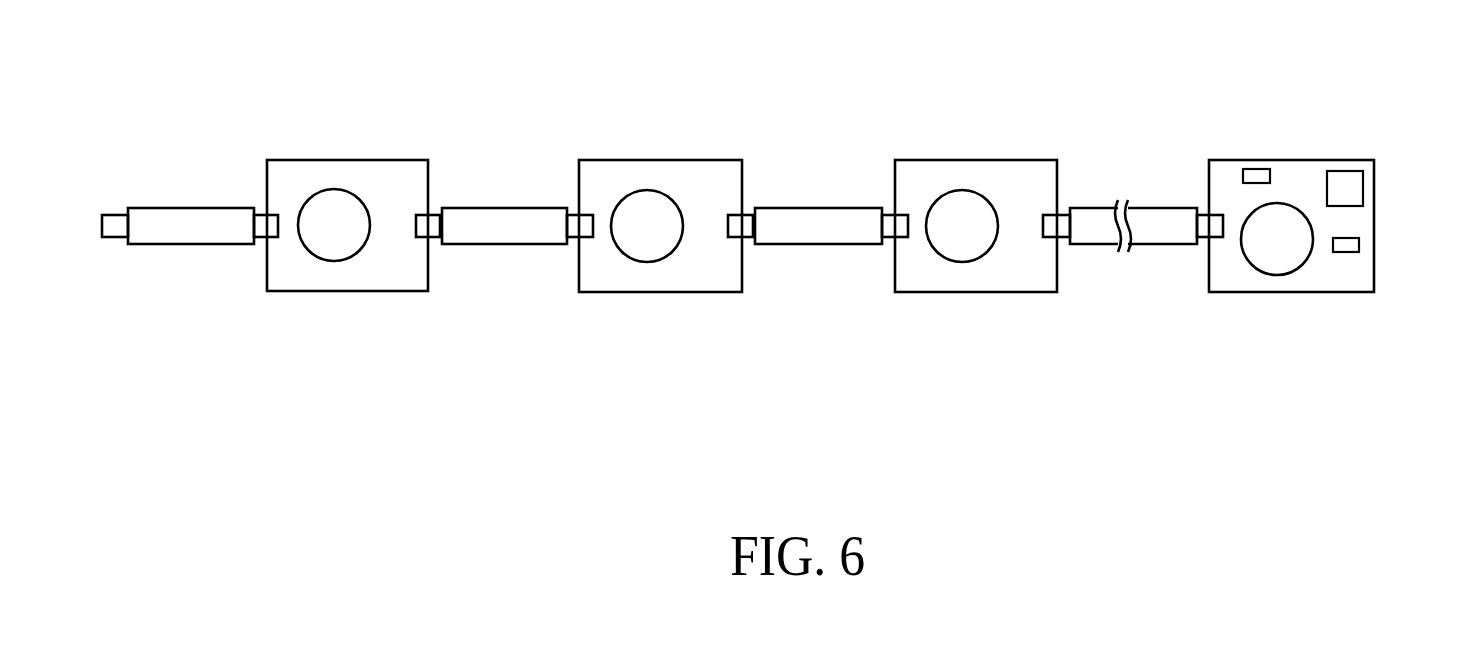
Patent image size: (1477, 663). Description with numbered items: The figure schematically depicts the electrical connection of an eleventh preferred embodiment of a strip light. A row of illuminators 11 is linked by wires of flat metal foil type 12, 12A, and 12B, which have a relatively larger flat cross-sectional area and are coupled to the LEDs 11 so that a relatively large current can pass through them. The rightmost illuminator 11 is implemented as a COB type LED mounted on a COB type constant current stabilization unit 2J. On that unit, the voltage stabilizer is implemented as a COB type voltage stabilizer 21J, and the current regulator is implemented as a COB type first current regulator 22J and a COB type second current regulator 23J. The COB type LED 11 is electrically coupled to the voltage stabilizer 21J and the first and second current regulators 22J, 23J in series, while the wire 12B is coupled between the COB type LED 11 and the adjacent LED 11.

The constant current stabilization unit 2J is at (1321, 181).
The illuminator 11 is at (336, 203).
The wire of flat metal foil type 12 is at (492, 222).
The wire of flat metal foil type 12A is at (167, 215).
The wire of flat metal foil type 12B is at (1088, 222).
The voltage stabilizer 21J is at (1343, 183).
The first current regulator 22J is at (1348, 247).
The second current regulator 23J is at (1252, 175).